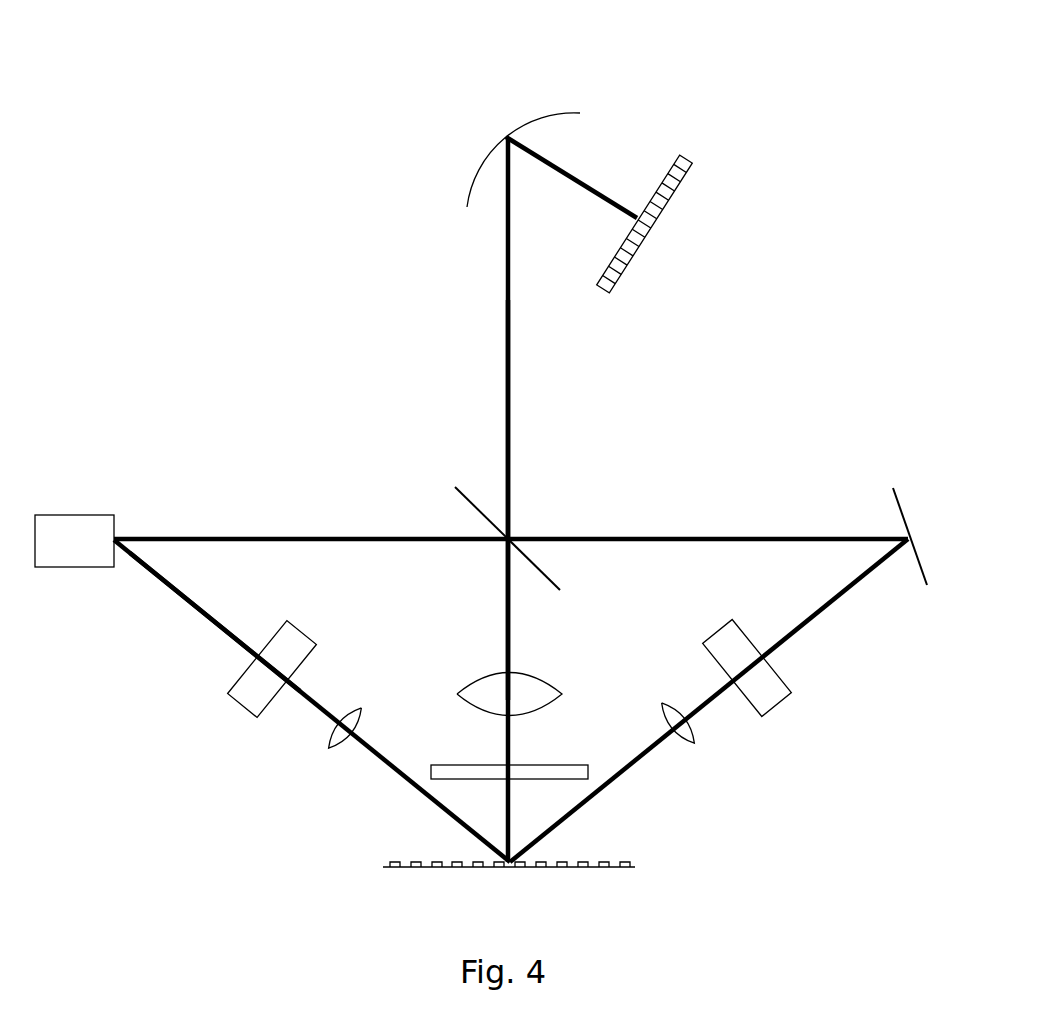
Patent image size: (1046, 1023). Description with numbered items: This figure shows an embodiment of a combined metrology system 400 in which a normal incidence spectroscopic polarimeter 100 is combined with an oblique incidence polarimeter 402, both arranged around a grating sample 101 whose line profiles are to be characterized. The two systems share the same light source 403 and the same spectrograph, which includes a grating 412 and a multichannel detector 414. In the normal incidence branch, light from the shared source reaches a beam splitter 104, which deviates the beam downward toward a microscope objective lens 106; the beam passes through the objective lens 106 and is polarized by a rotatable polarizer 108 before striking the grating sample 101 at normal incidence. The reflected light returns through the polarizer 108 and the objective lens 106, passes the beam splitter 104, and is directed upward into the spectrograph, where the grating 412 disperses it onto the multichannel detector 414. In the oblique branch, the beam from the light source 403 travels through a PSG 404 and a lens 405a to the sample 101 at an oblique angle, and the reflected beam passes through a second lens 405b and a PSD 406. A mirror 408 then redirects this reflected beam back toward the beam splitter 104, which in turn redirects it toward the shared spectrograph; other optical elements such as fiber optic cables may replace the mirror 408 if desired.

The optical inspection system 400 is at (511, 442).
The normal incidence spectroscopic polarimeter 100 is at (399, 446).
The oblique incidence polarimeter 402 is at (200, 695).
The light source 403 is at (93, 515).
The PSG 404 is at (234, 684).
The lens 405a is at (327, 740).
The lens 405b is at (698, 738).
The PSD 406 is at (777, 707).
The mirror 408 is at (893, 490).
The grating 412 is at (481, 159).
The multichannel detector 414 is at (688, 168).
The beam splitter 104 is at (550, 578).
The microscope objective lens 106 is at (553, 683).
The polarizer 108 is at (590, 763).
The grating sample 101 is at (630, 862).